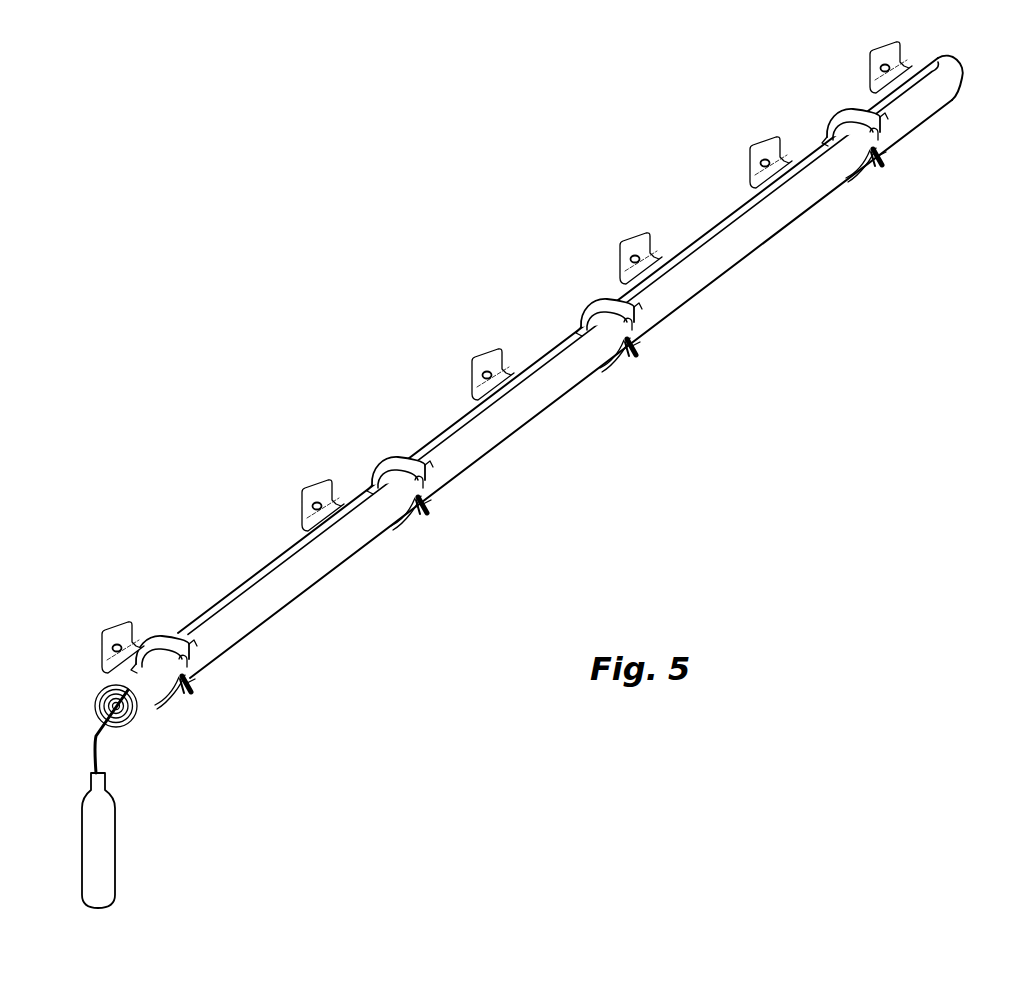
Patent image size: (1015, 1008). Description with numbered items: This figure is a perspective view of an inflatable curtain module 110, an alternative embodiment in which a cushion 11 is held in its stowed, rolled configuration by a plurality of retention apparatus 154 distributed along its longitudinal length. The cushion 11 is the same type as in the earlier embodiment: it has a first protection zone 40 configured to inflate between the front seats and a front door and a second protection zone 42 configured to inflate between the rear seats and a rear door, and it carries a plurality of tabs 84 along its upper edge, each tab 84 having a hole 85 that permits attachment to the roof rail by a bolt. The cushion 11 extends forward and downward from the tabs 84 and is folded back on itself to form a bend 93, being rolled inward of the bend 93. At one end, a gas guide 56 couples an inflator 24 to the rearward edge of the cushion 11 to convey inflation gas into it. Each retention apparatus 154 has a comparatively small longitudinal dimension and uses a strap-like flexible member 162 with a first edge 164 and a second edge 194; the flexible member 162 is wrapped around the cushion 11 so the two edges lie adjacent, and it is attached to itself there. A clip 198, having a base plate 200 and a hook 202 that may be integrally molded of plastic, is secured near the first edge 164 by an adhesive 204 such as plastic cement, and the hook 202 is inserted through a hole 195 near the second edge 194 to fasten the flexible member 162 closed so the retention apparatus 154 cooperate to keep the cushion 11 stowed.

The cushion 11 is at (570, 367).
The inflator 24 is at (90, 836).
The first protection zone 40 is at (570, 367).
The second protection zone 42 is at (273, 562).
The gas guide 56 is at (90, 760).
The tab 84 is at (508, 340).
The hole 85 is at (114, 637).
The bend 93 is at (137, 733).
The inflatable curtain module 110 is at (570, 367).
The retention apparatus 154 is at (501, 408).
The flexible member 162 is at (178, 634).
The first edge 164 is at (167, 706).
The second edge 194 is at (138, 668).
The hole 195 is at (186, 648).
The clip 198 is at (204, 683).
The base plate 200 is at (200, 688).
The hook 202 is at (201, 663).
The adhesive 204 is at (187, 706).